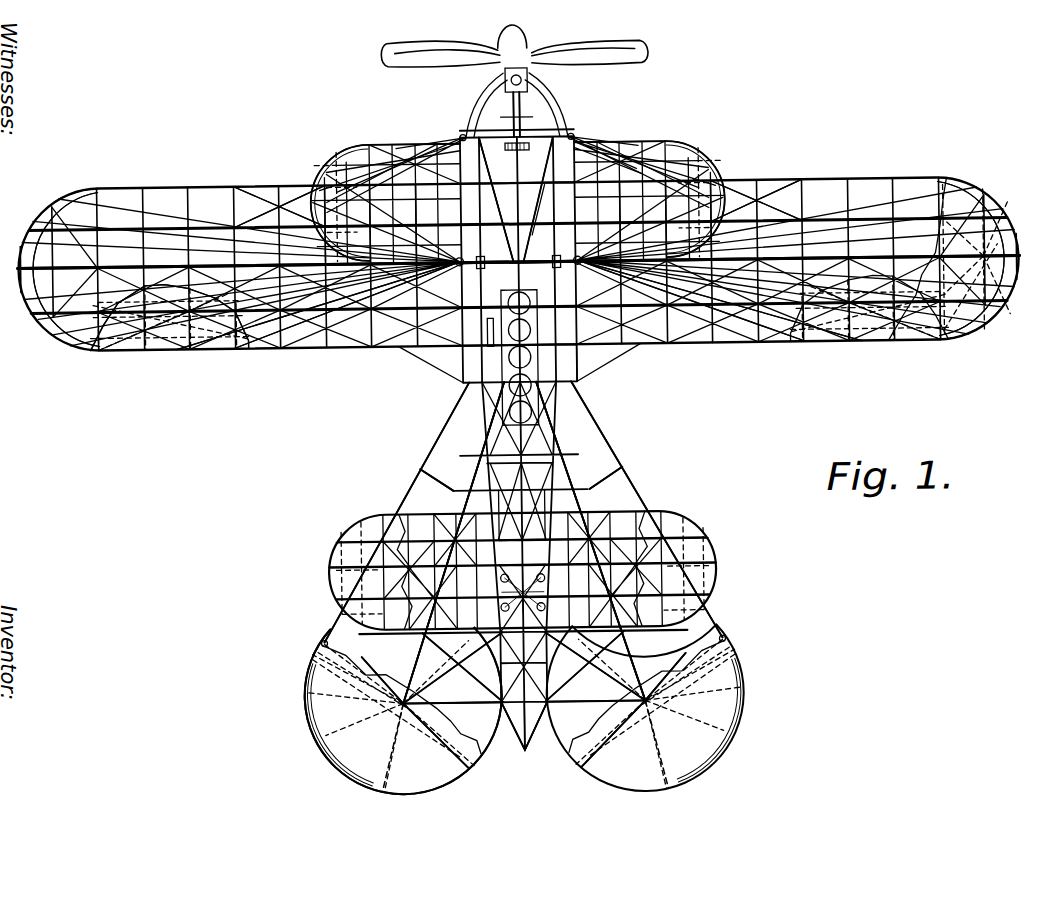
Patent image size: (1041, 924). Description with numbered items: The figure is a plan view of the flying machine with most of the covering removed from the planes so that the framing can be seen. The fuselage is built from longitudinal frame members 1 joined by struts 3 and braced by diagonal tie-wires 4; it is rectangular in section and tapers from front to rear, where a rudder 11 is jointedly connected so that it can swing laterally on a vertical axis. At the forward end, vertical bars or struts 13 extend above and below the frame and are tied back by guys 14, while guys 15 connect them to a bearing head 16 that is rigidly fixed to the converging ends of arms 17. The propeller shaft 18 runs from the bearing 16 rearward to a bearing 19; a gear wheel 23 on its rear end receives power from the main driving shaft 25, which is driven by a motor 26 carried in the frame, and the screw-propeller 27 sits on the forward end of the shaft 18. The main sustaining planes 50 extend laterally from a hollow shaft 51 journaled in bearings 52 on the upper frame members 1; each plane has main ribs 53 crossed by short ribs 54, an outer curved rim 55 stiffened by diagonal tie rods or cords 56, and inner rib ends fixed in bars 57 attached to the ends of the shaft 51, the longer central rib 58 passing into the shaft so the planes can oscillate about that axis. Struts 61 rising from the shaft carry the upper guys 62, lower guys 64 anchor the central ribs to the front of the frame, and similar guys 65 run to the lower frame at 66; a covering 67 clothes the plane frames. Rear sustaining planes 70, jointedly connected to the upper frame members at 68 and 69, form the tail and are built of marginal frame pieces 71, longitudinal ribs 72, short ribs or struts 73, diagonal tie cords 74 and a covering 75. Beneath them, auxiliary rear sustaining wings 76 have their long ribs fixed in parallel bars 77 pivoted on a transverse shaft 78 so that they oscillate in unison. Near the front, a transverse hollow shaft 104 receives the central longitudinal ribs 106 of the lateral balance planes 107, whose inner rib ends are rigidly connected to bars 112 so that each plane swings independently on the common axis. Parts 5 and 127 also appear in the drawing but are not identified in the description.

The longitudinal frame members 1 is at (464, 319).
The struts 3 is at (513, 370).
The diagonal tie-wires 4 is at (522, 398).
The fuselage cross frame 5 is at (522, 515).
The rudder 11 is at (524, 735).
The vertical bars or struts 13 is at (467, 136).
The guys 14 is at (504, 180).
The guys 15 is at (482, 119).
The bearing member or head 16 is at (510, 80).
The arms 17 is at (497, 100).
The propeller shaft 18 is at (516, 117).
The bearing 19 is at (525, 117).
The gear wheel 23 is at (509, 146).
The main driving shaft 25 is at (513, 252).
The motor 26 is at (591, 386).
The screw-propeller 27 is at (532, 48).
The main sustaining planes 50 is at (208, 182).
The hollow shaft or tubular member 51 is at (561, 253).
The bearings 52 is at (486, 268).
The main ribs 53 is at (146, 182).
The short ribs 54 is at (263, 182).
The rim 55 is at (76, 184).
The diagonal tie rods or cords 56 is at (28, 219).
The bars 57 is at (446, 377).
The central rib 58 is at (252, 263).
The struts 61 is at (462, 289).
The upper guys 62 is at (470, 244).
The lower guys 64 is at (408, 150).
The guys 65 is at (400, 348).
The connection point 66 is at (456, 394).
The covering 67 is at (186, 338).
The jointed connection 68 is at (471, 399).
The jointed connection 69 is at (467, 671).
The rear sustaining planes 70 is at (317, 639).
The marginal frame pieces 71 is at (328, 617).
The longitudinal ribs 72 is at (406, 664).
The short ribs or struts 73 is at (410, 477).
The diagonal tie cords 74 is at (377, 668).
The covering 75 is at (300, 694).
The auxiliary rear sustaining wings 76 is at (339, 518).
The bars 77 is at (438, 632).
The transverse shaft 78 is at (499, 592).
The transverse hollow shaft 104 is at (534, 200).
The central longitudinal ribs 106 is at (364, 141).
The lateral balance planes 107 is at (330, 165).
The bars 112 is at (459, 139).
The tail member 127 is at (508, 745).